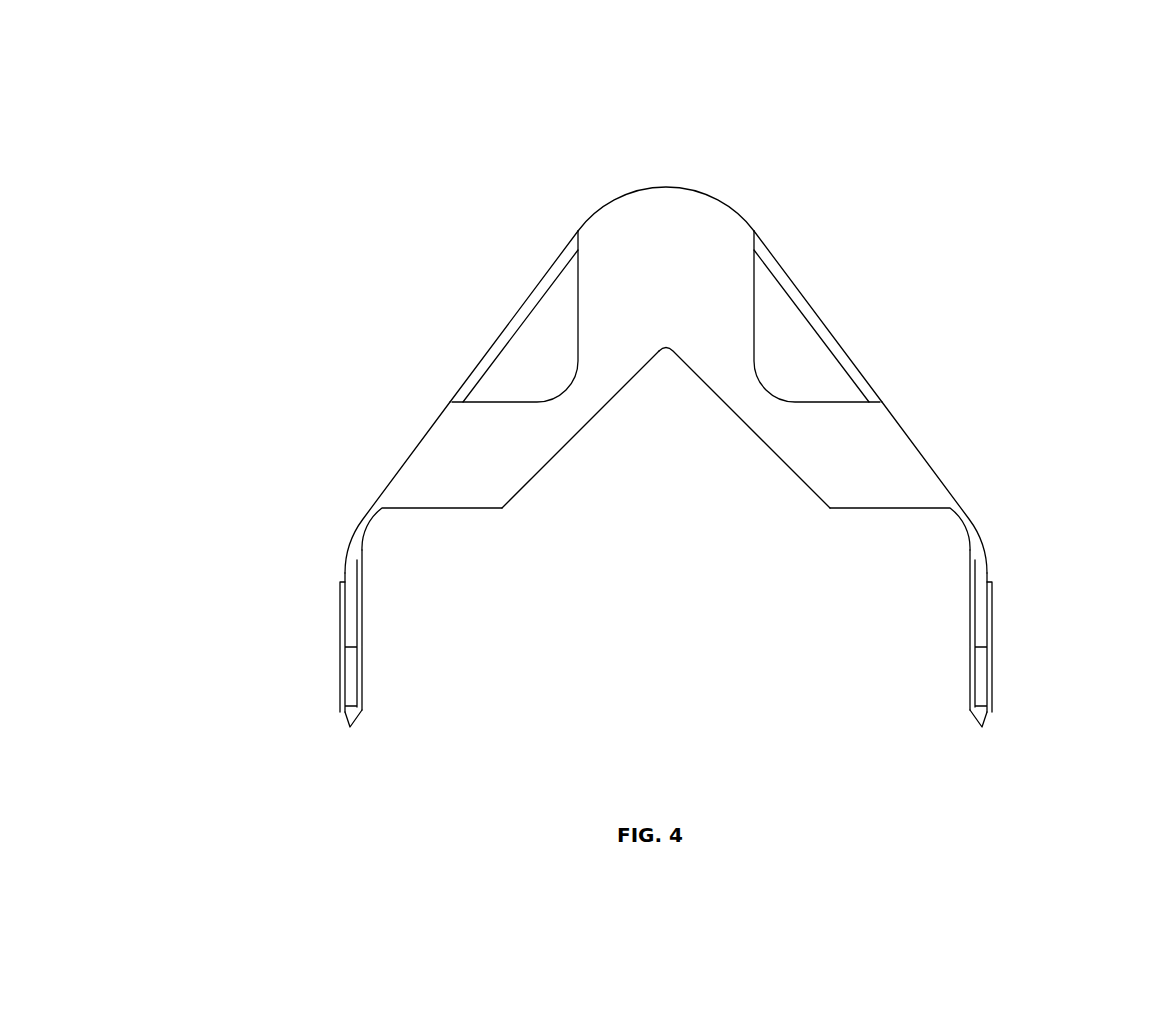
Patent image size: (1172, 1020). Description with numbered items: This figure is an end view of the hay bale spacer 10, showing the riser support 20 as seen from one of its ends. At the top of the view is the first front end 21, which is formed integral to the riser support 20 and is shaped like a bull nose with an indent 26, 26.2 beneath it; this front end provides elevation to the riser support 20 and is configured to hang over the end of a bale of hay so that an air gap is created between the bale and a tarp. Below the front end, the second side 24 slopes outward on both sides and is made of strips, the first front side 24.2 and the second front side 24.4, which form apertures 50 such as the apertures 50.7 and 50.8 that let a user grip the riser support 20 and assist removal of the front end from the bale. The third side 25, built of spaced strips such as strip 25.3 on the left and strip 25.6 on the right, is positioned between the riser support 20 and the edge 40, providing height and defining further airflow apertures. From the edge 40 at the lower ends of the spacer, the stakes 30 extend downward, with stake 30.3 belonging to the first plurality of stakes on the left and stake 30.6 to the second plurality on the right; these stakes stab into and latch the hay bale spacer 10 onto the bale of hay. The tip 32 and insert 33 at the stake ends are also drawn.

The hay bale spacer 10 is at (652, 454).
The riser support 20 is at (715, 270).
The first front end 21 is at (715, 290).
The apertures 50 is at (686, 291).
The aperture 50.7 is at (543, 353).
The aperture 50.8 is at (790, 325).
The third side 25 is at (623, 316).
The strip 25.3 is at (477, 365).
The strip 25.6 is at (842, 334).
The edge 40 is at (547, 468).
The indent 26 is at (744, 473).
The indent 26.2 is at (660, 443).
The second side 24 is at (666, 552).
The first front side 24.2 is at (461, 466).
The second front side 24.4 is at (892, 473).
The stakes 30 is at (652, 689).
The stake 30.3 is at (249, 689).
The stake 30.6 is at (992, 678).
The leg tip 32 is at (343, 730).
The leg insert 33 is at (343, 631).